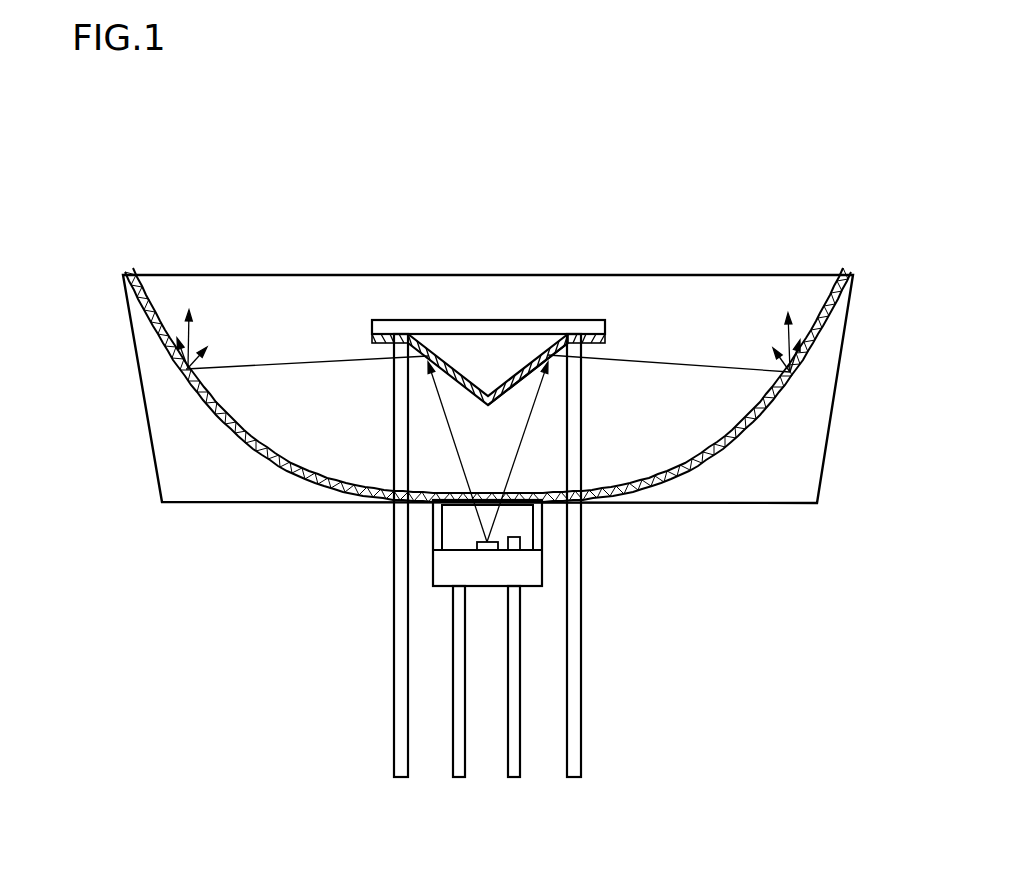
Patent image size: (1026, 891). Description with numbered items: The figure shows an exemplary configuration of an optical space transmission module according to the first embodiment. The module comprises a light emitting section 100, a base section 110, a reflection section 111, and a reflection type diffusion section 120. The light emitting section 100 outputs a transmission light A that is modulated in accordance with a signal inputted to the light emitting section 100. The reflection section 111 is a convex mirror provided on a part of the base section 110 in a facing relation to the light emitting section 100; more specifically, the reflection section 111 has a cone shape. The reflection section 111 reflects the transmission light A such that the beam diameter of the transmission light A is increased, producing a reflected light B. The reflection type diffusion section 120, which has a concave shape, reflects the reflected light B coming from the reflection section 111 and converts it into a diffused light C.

The light emitting section 100 is at (488, 549).
The base section 110 is at (482, 360).
The reflection section 111 is at (508, 388).
The reflection type diffusion section 120 is at (215, 415).
The transmission light A is at (512, 470).
The reflected light B is at (685, 365).
The diffused light C is at (202, 308).